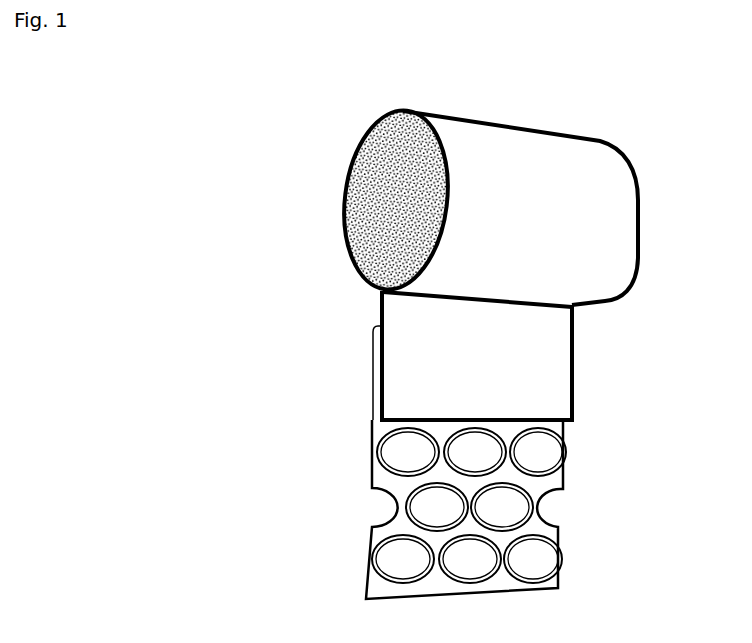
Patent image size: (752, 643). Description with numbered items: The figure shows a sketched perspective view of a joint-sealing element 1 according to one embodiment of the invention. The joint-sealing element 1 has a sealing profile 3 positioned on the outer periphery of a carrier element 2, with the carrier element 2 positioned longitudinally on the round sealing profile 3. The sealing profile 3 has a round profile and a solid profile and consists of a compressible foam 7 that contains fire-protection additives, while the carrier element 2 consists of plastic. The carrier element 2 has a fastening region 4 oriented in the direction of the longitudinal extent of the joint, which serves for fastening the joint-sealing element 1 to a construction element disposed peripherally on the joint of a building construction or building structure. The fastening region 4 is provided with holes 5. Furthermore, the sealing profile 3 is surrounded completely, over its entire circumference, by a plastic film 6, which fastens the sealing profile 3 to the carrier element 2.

The joint-sealing element 1 is at (308, 268).
The carrier element 2 is at (372, 372).
The sealing profile 3 is at (473, 163).
The fastening region 4 is at (402, 525).
The holes 5 is at (528, 558).
The plastic film 6 is at (538, 352).
The compressible foam 7 is at (388, 163).